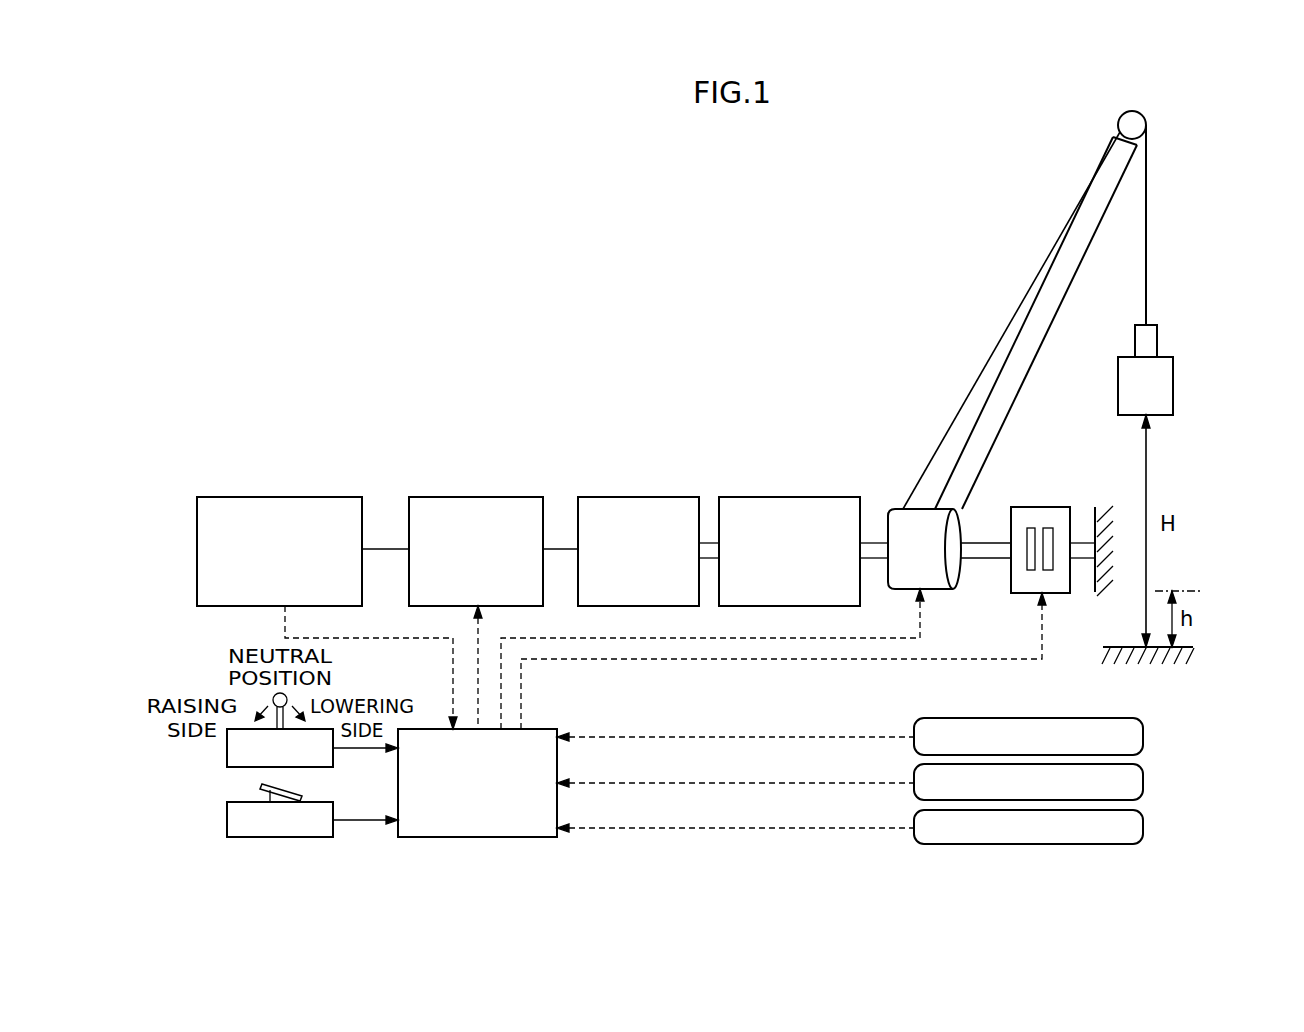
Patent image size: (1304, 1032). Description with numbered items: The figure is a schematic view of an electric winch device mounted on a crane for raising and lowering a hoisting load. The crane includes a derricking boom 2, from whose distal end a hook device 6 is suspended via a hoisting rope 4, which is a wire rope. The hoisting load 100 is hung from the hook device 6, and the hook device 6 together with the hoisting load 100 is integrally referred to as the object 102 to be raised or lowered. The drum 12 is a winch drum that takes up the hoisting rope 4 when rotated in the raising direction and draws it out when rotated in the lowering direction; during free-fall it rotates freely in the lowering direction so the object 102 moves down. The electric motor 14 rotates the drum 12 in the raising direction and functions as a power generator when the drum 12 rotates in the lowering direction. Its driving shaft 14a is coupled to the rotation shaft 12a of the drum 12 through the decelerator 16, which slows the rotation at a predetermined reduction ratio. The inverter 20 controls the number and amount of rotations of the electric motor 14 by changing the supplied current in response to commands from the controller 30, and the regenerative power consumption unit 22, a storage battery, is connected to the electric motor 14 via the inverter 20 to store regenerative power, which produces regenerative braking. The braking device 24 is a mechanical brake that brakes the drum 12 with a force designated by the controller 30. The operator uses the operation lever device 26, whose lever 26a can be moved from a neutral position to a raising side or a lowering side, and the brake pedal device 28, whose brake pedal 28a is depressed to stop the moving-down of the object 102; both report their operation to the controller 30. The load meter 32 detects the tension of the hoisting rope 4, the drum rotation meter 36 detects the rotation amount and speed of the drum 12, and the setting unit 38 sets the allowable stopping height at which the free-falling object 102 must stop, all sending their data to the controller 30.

The boom 2 is at (1050, 311).
The hoisting rope 4 is at (1147, 234).
The hook device 6 is at (1157, 337).
The drum 12 is at (912, 509).
The rotation shaft 12a is at (877, 541).
The electric motor 14 is at (640, 497).
The driving shaft 14a is at (710, 541).
The decelerator 16 is at (789, 497).
The inverter 20 is at (418, 497).
The regenerative power consumption unit 22 is at (284, 497).
The braking device 24 is at (1047, 507).
The operation lever device 26 is at (227, 747).
The lever 26a is at (290, 699).
The brake pedal device 28 is at (227, 816).
The brake pedal 28a is at (284, 791).
The controller 30 is at (483, 839).
The load meter 32 is at (1143, 735).
The drum rotation meter 36 is at (1143, 781).
The setting unit 38 is at (1143, 826).
The hoisting load 100 is at (1173, 380).
The object to be raised/lowered 102 is at (1237, 330).